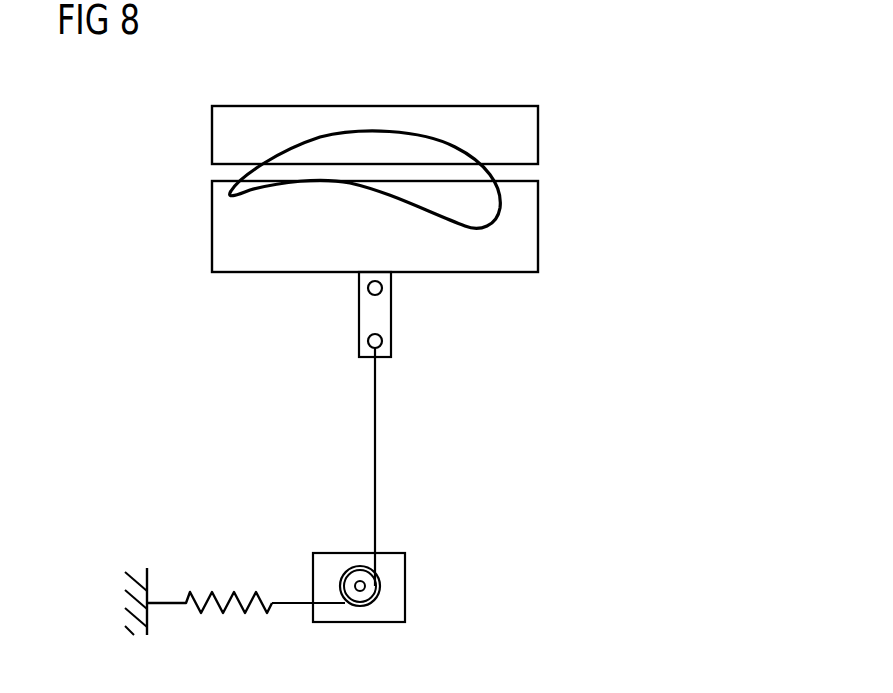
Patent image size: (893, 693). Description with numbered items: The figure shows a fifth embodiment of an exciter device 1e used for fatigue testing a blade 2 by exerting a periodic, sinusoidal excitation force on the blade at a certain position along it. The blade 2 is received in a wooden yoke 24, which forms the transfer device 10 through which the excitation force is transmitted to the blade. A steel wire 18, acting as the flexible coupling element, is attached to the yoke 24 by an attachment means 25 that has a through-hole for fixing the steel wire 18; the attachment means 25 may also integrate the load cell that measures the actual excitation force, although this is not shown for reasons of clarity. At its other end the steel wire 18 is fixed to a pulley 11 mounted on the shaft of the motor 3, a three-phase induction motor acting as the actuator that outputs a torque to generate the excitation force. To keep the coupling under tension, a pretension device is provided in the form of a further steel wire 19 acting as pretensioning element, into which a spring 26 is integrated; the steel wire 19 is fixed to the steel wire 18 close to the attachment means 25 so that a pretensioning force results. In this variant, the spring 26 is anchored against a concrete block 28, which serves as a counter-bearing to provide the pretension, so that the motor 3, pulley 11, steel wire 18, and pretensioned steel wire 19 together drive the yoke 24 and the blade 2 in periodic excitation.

The transfer device 10 is at (508, 98).
The wooden yoke 24 is at (455, 104).
The blade 2 is at (388, 140).
The exciter device 1e is at (463, 413).
The attachment means 25 is at (360, 313).
The steel wire 18 is at (377, 473).
The motor 3 is at (406, 570).
The pulley 11 is at (366, 593).
The steel wire 19 is at (283, 600).
The spring 26 is at (210, 594).
The concrete block 28 is at (126, 602).